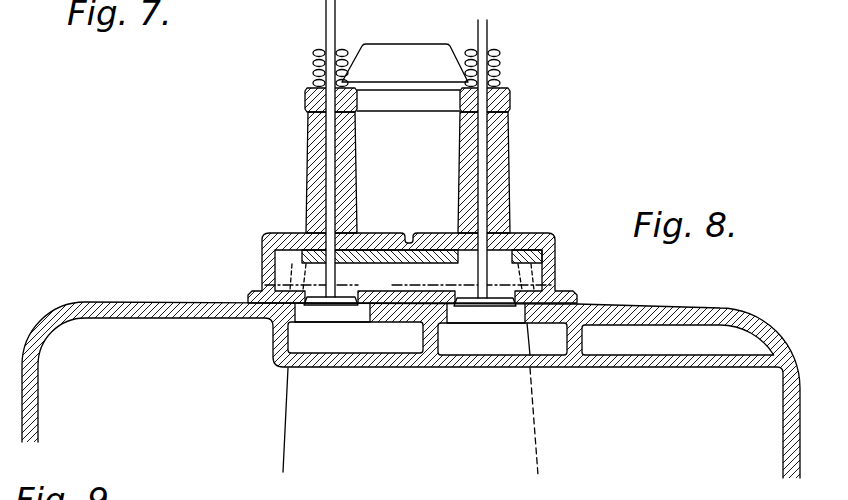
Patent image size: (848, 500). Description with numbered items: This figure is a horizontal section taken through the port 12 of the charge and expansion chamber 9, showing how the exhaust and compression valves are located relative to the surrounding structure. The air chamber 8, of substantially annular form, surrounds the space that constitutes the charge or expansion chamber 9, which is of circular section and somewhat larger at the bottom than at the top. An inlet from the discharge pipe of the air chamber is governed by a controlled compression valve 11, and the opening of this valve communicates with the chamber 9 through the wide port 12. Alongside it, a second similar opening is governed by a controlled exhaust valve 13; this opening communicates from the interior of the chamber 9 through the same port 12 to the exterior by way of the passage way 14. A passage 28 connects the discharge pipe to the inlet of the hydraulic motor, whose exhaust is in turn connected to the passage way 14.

The air chamber 8 is at (182, 318).
The charge or expansion chamber 9 is at (410, 421).
The compression valve 11 is at (332, 199).
The port 12 is at (408, 270).
The exhaust valve 13 is at (485, 199).
The passage way 14 is at (502, 339).
The passage 28 is at (531, 338).